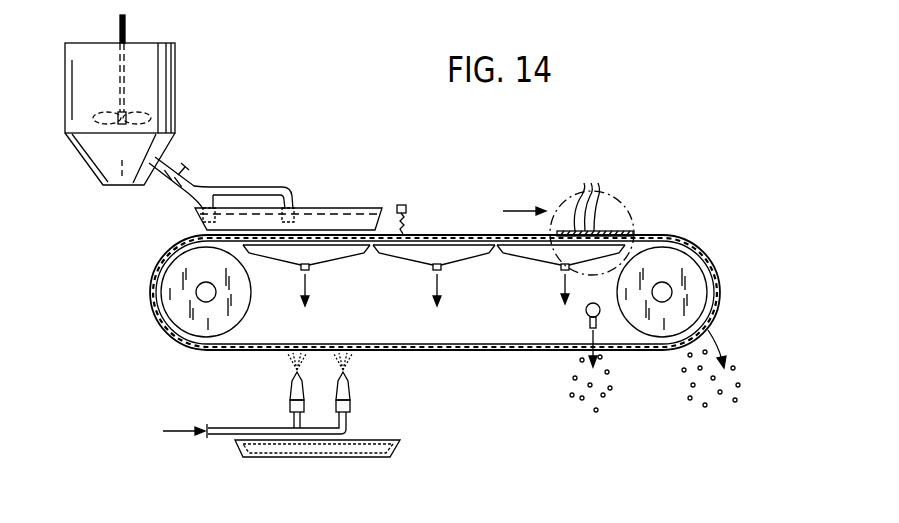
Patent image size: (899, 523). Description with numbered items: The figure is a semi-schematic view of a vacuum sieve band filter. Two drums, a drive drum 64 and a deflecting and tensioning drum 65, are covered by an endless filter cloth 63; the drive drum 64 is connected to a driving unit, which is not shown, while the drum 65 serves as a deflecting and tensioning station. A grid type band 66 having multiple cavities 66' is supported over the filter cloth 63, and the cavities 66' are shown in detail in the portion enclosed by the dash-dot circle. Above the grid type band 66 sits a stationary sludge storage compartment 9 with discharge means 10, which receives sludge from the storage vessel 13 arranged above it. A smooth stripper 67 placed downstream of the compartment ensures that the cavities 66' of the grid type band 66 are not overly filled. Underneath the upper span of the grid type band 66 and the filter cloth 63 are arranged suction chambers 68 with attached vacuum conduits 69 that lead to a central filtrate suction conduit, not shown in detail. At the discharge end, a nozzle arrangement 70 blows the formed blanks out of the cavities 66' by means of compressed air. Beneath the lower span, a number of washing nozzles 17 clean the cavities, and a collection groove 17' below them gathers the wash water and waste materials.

The storage vessel 13 is at (165, 57).
The discharge means 10 is at (192, 188).
The stationary sludge storage compartment 9 is at (323, 220).
The endless filter cloth 63 is at (702, 262).
The drive drum 64 is at (698, 296).
The deflecting and tensioning drum 65 is at (172, 300).
The grid type band 66 is at (599, 224).
The cavities 66' is at (595, 195).
The smooth stripper 67 is at (408, 223).
The suction chambers 68 is at (345, 250).
The vacuum conduits 69 is at (300, 275).
The nozzle arrangement 70 is at (590, 328).
The washing nozzles 17 is at (283, 395).
The collection groove 17' is at (317, 471).